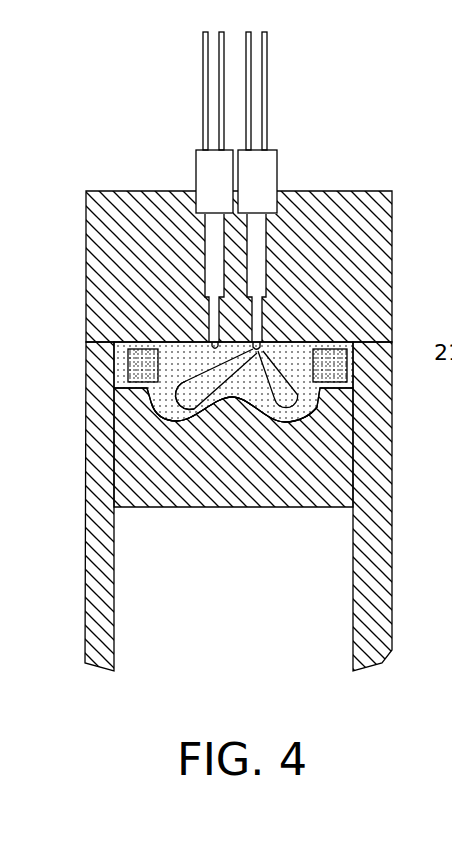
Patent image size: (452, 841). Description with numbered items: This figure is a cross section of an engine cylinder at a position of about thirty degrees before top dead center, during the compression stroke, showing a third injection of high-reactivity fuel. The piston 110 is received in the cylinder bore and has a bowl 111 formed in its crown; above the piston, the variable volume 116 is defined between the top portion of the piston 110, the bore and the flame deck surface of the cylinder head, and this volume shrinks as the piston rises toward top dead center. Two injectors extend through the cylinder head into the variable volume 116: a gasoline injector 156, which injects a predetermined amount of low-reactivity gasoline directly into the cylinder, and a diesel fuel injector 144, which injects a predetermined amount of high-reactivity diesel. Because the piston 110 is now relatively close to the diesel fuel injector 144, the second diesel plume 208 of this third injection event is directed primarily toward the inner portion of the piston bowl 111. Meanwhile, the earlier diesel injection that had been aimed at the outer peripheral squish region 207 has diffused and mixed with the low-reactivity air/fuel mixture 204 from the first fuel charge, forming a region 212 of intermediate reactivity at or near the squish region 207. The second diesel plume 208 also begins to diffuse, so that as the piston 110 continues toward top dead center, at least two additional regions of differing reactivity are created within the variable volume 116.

The piston 110 is at (143, 507).
The bowl 111 is at (318, 407).
The variable volume 116 is at (169, 404).
The diesel fuel injector 144 is at (263, 175).
The gasoline injector 156 is at (208, 175).
The air/fuel mixture 204 is at (160, 398).
The squish region 207 is at (196, 337).
The second diesel plume 208 is at (288, 398).
The region of intermediate reactivity 212 is at (115, 363).